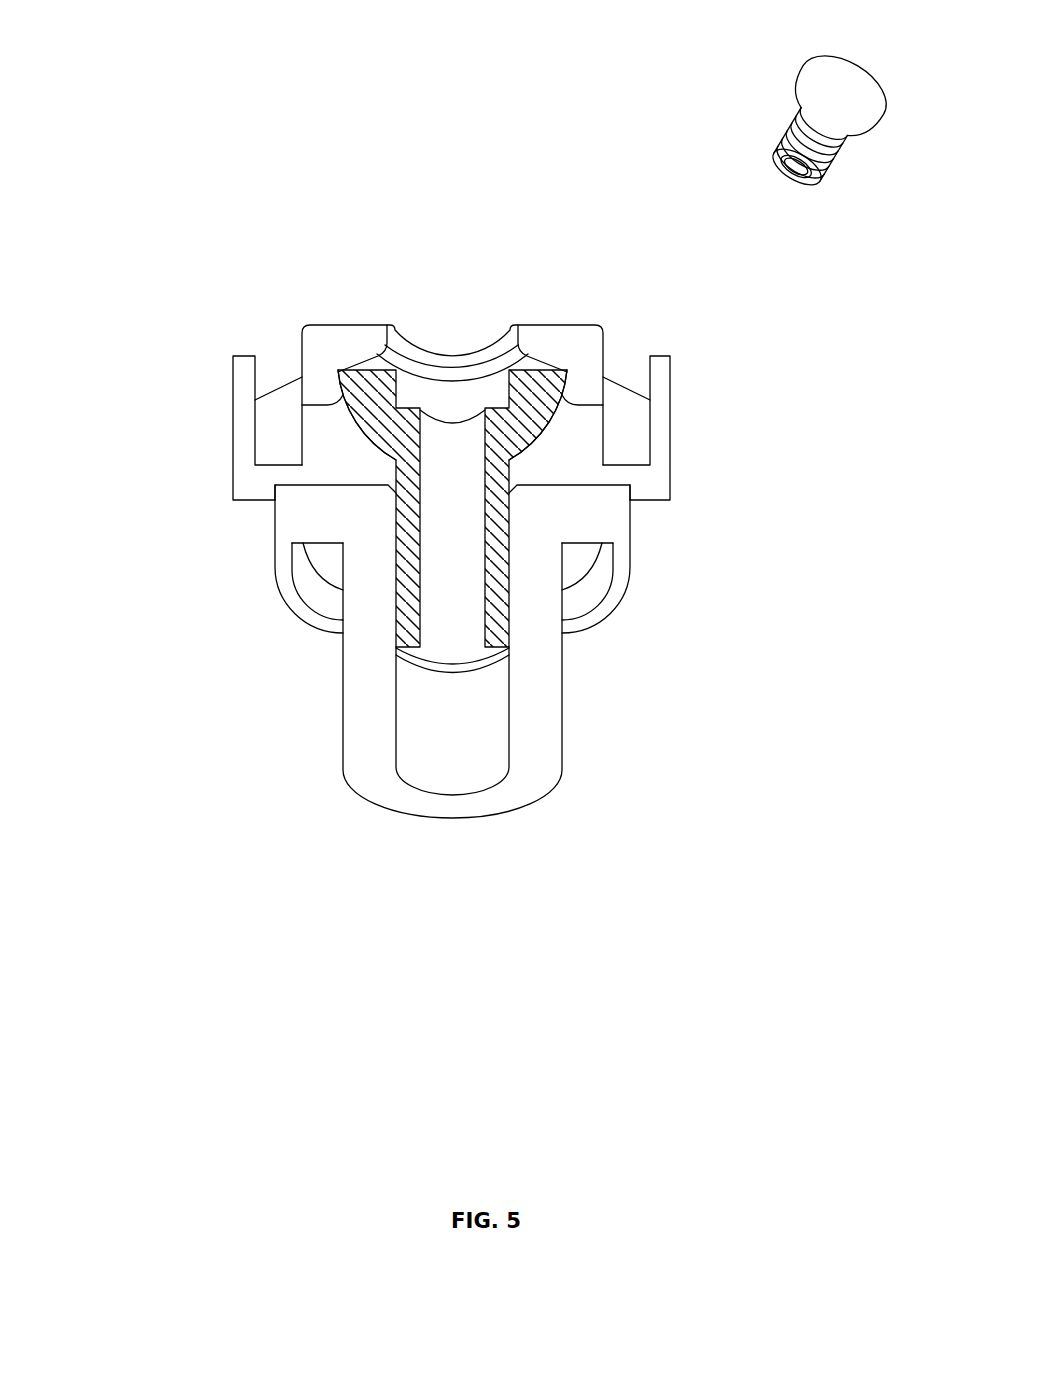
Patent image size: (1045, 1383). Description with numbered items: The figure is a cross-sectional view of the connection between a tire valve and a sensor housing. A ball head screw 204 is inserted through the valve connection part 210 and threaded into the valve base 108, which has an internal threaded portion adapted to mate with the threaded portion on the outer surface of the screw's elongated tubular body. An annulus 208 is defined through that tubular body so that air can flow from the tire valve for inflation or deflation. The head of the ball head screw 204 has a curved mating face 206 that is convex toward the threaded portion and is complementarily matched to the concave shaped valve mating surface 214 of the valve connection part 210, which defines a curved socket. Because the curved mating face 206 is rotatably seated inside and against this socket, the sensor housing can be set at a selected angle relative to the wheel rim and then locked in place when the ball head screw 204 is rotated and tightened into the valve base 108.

The valve base 108 is at (372, 523).
The ball head screw 204 is at (767, 131).
The curved mating face 206 is at (610, 23).
The annulus 208 is at (787, 177).
The valve connection part 210 is at (99, 260).
The concave shaped valve mating surface 214 is at (350, 435).